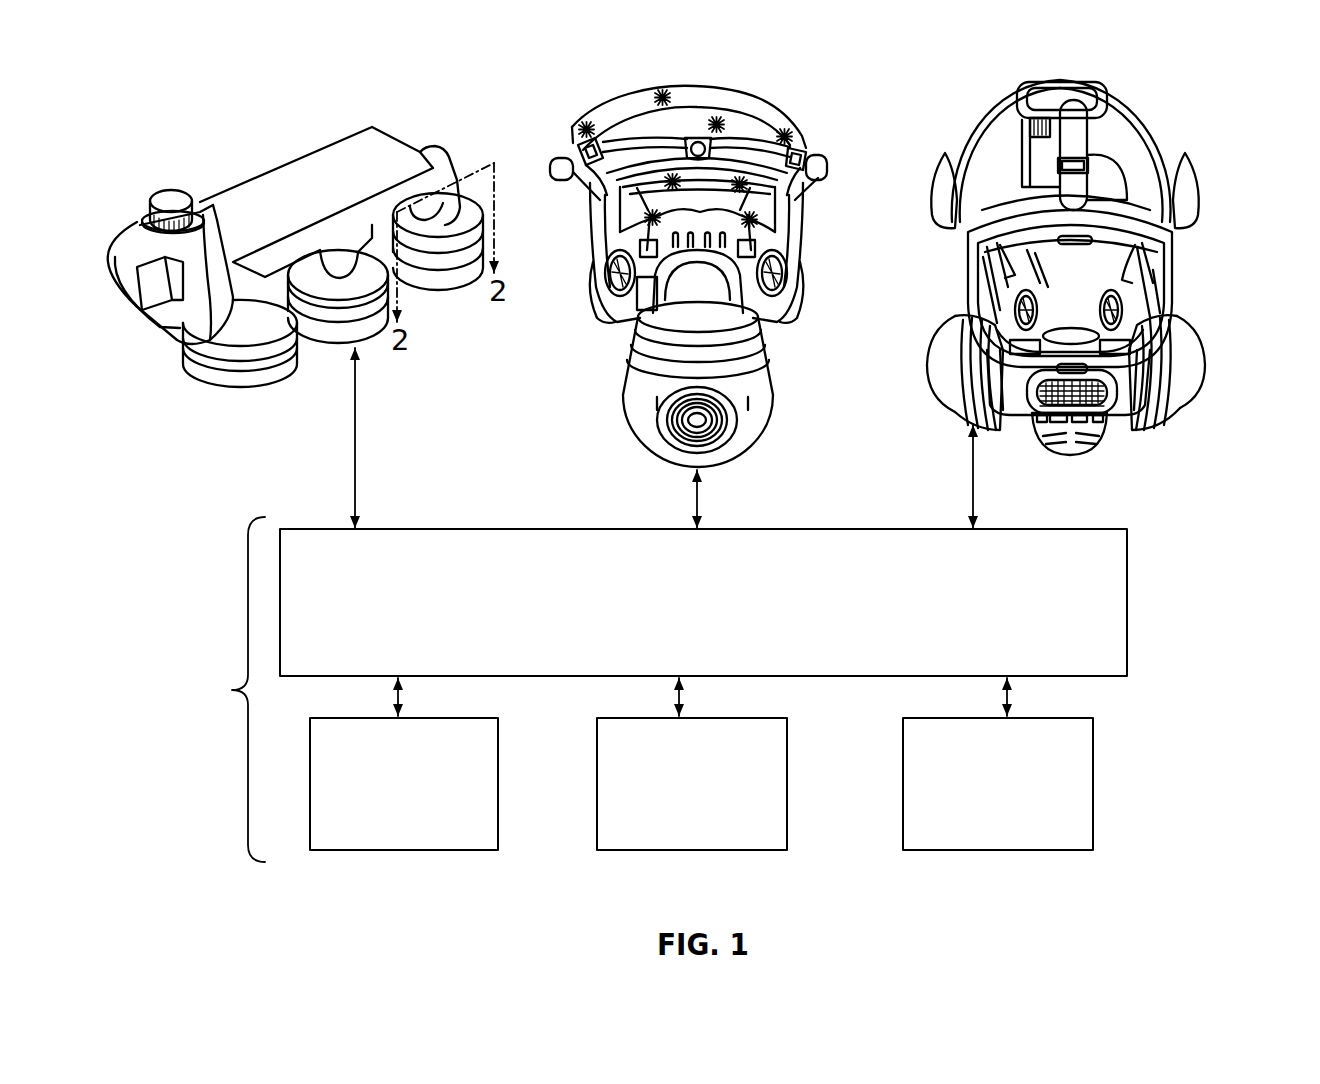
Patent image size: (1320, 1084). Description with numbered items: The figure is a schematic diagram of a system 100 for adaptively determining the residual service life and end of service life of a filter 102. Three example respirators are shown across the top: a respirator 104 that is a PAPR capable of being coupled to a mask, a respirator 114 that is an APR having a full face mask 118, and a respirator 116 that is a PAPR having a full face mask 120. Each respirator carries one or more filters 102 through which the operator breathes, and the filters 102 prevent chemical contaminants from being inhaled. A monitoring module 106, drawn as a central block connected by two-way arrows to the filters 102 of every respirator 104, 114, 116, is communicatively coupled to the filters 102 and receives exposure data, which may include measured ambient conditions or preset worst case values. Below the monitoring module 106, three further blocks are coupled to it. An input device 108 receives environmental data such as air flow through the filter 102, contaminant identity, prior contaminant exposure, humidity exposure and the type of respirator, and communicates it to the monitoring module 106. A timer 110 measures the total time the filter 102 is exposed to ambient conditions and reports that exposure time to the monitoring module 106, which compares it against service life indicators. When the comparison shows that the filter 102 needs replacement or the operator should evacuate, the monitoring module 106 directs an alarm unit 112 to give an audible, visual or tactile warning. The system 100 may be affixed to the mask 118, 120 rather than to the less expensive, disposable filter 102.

The system 100 is at (216, 689).
The filter 102 is at (225, 385).
The respirator 104 is at (355, 133).
The monitoring module 106 is at (1127, 612).
The input device 108 is at (395, 851).
The timer 110 is at (682, 851).
The alarm unit 112 is at (995, 851).
The respirator 114 is at (718, 193).
The respirator 116 is at (1087, 255).
The full face mask 118 is at (790, 240).
The full face mask 120 is at (1167, 283).